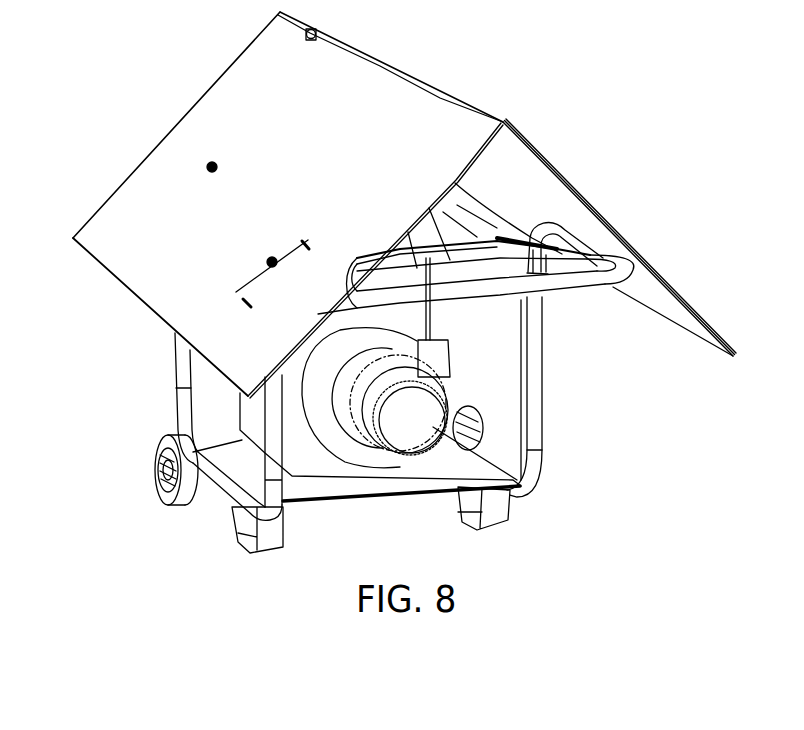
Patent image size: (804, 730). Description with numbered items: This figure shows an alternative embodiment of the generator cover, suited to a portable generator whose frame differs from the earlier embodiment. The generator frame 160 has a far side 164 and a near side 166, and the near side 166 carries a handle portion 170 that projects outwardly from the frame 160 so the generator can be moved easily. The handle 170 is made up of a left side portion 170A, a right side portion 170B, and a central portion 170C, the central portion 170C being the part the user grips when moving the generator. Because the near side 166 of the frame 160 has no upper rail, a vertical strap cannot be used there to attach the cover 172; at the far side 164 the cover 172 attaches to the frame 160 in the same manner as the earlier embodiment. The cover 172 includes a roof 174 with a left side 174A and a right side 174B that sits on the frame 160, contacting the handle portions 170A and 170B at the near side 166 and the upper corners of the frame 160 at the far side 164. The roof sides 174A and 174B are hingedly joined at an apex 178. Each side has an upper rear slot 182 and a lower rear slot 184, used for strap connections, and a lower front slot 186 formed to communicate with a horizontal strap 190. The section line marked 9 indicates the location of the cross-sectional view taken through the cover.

The generator frame 160 is at (225, 504).
The far side 164 is at (173, 360).
The near side 166 is at (543, 415).
The handle portion 170 is at (570, 297).
The left side portion 170A is at (350, 293).
The right side portion 170B is at (600, 252).
The central portion 170C is at (468, 292).
The cover 172 is at (512, 68).
The roof 174 is at (348, 162).
The left side 174A is at (168, 130).
The right side 174B is at (575, 188).
The apex 178 is at (398, 68).
The upper rear slot 182 is at (300, 29).
The lower rear slot 184 is at (217, 177).
The lower front slot 186 is at (282, 273).
The horizontal strap 190 is at (429, 208).
The section line 9- 9 is at (263, 264).